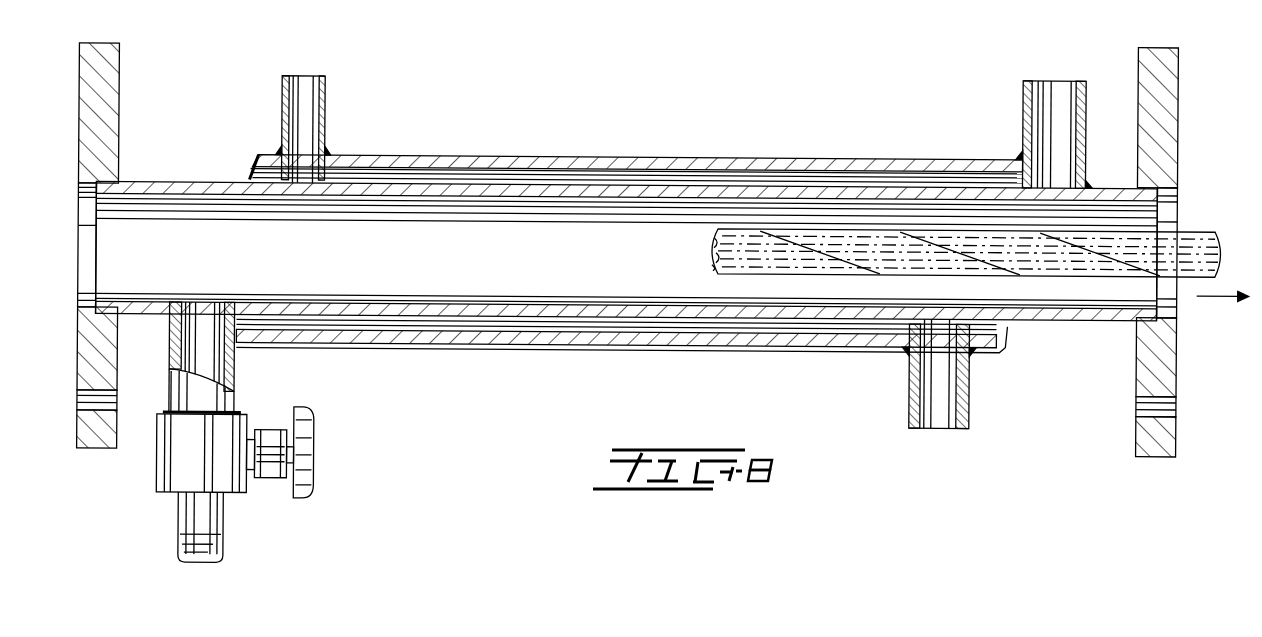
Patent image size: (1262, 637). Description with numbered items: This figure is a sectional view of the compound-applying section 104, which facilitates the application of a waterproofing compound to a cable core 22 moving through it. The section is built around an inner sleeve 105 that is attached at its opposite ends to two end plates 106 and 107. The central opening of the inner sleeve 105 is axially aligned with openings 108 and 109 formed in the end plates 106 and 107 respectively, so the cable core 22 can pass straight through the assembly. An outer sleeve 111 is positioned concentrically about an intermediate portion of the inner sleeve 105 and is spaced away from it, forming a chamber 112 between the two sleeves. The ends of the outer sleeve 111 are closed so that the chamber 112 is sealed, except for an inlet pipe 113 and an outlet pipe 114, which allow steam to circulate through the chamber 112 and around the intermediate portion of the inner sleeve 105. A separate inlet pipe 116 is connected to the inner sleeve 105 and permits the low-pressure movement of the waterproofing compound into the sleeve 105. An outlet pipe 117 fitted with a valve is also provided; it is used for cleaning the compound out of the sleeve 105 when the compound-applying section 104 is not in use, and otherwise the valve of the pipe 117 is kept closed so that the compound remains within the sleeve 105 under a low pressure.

The cable core 22 is at (1189, 286).
The compound-applying section 104 is at (723, 150).
The inner sleeve 105 is at (152, 184).
The end plate 106 is at (111, 55).
The end plate 107 is at (1140, 56).
The opening 108 is at (78, 200).
The opening 109 is at (1172, 204).
The outer sleeve 111 is at (560, 160).
The chamber 112 is at (541, 336).
The inlet pipe 113 is at (324, 113).
The outlet pipe 114 is at (910, 408).
The inlet pipe 116 is at (1025, 124).
The outlet pipe 117 is at (238, 408).